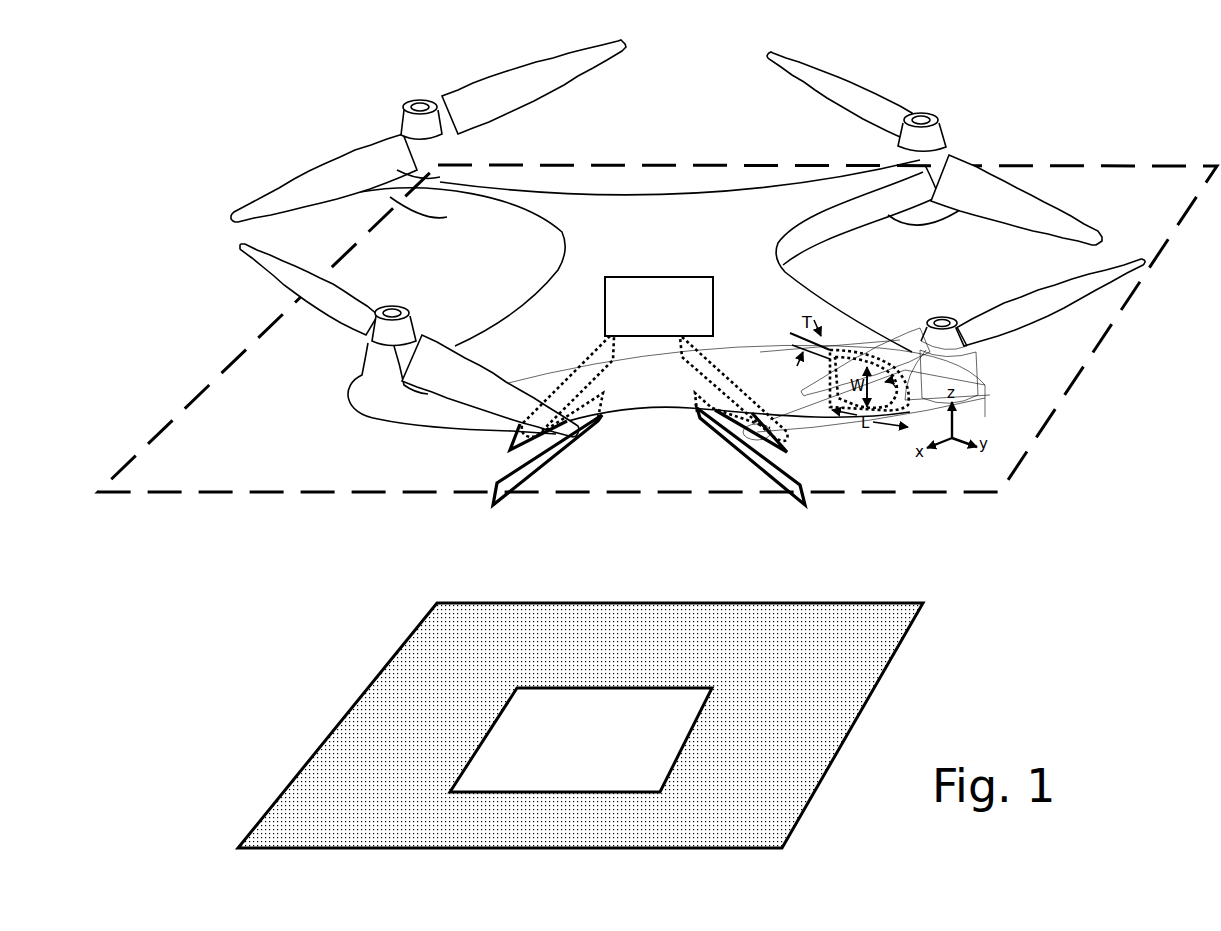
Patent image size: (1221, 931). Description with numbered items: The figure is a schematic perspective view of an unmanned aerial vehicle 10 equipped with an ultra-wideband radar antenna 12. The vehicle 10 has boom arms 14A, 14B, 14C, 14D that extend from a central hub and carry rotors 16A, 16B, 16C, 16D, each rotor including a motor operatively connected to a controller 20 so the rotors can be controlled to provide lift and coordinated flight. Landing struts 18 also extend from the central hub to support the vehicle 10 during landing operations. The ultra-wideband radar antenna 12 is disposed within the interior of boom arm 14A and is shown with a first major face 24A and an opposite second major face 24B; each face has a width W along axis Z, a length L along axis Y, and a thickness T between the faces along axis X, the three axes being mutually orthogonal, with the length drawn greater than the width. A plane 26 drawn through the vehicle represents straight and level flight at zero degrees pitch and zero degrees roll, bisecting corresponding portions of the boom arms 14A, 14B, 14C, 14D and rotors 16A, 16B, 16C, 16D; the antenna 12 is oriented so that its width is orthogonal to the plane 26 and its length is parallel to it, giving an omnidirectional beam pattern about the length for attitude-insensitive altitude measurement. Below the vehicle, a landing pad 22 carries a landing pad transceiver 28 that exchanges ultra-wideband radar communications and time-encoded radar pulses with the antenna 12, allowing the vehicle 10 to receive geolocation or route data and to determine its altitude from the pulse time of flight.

The unmanned aerial vehicle 10 is at (663, 222).
The ultra-wideband radar antenna 12 is at (910, 380).
The boom arm 14A is at (790, 387).
The boom arm 14B is at (837, 182).
The boom arm 14C is at (500, 222).
The boom arm 14D is at (463, 415).
The rotor 16A is at (957, 337).
The rotor 16B is at (932, 135).
The rotor 16C is at (405, 116).
The rotor 16D is at (383, 329).
The landing struts 18 is at (550, 457).
The controller 20 is at (655, 359).
The landing pad 22 is at (815, 700).
The first major face 24A is at (880, 400).
The second major face 24B is at (888, 362).
The plane 26 is at (1100, 355).
The landing pad transceiver 28 is at (581, 740).